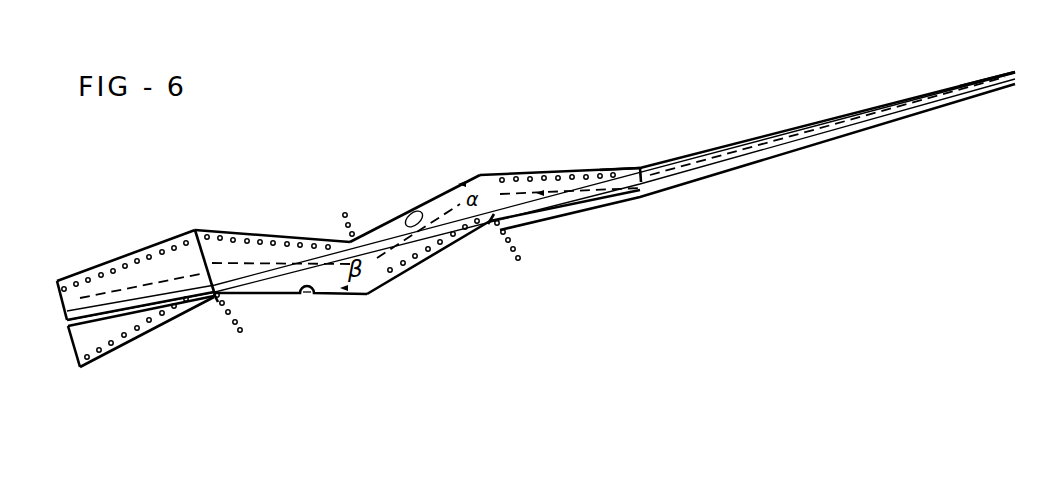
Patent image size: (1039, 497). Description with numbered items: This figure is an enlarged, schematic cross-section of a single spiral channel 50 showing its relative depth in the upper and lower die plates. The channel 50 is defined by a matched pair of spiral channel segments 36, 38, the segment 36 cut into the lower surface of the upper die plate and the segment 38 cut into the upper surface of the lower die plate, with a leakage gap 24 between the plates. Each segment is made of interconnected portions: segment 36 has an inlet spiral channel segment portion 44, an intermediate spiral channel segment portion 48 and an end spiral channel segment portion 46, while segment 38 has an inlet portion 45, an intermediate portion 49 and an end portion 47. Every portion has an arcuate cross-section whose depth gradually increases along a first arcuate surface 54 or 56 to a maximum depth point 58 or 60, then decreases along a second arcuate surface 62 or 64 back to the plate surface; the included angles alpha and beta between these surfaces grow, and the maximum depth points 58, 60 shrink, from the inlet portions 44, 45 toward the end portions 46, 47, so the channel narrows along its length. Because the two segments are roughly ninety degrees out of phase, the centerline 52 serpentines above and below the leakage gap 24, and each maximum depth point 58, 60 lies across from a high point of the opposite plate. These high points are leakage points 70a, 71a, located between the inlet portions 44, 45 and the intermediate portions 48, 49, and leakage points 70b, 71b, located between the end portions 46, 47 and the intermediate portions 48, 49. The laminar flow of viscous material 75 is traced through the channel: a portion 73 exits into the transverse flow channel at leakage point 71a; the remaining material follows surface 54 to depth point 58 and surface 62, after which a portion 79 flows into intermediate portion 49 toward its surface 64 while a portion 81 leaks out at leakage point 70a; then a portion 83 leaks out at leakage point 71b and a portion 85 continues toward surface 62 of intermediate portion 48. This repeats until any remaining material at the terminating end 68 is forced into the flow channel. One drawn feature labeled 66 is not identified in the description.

The leakage gap 24 is at (877, 117).
The spiral channel segment 36 is at (140, 232).
The spiral channel segment 38 is at (262, 378).
The inlet spiral channel segment portion 44 is at (232, 220).
The inlet spiral channel segment portion 45 is at (138, 337).
The end spiral channel segment portion 46 is at (792, 115).
The end spiral channel segment portion 47 is at (623, 203).
The intermediate spiral channel segment portion 48 is at (537, 172).
The intermediate spiral channel segment portion 49 is at (433, 258).
The spiral channel 50 is at (303, 233).
The centerline 52 is at (62, 311).
The first arcuate surface 54 is at (78, 286).
The first arcuate surface 56 is at (277, 340).
The maximum depth point 58 is at (198, 229).
The maximum depth point 60 is at (358, 295).
The second arcuate surface 62 is at (580, 174).
The second arcuate surface 64 is at (171, 325).
The end edge 66 is at (71, 352).
The terminating end 68 is at (913, 88).
The leakage point 70a is at (366, 234).
The leakage point 70b is at (641, 168).
The leakage point 71a is at (213, 297).
The leakage point 71b is at (490, 226).
The portion of material 73 is at (230, 313).
The material 75 is at (101, 272).
The portion of material 79 is at (410, 268).
The portion of material 81 is at (349, 211).
The portion of material 83 is at (524, 262).
The portion of material 85 is at (506, 177).